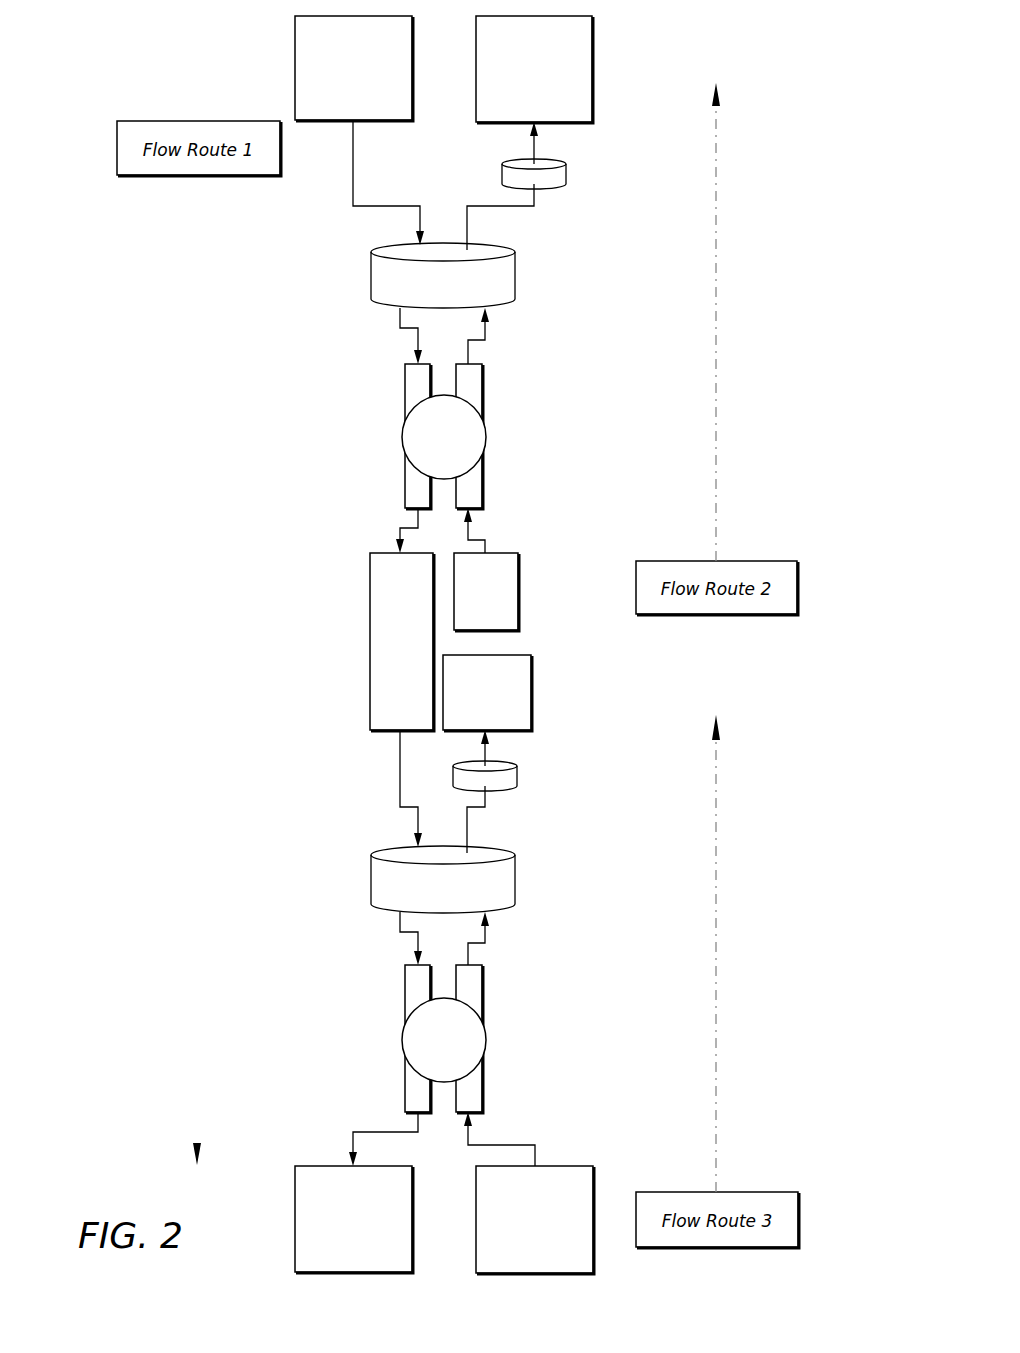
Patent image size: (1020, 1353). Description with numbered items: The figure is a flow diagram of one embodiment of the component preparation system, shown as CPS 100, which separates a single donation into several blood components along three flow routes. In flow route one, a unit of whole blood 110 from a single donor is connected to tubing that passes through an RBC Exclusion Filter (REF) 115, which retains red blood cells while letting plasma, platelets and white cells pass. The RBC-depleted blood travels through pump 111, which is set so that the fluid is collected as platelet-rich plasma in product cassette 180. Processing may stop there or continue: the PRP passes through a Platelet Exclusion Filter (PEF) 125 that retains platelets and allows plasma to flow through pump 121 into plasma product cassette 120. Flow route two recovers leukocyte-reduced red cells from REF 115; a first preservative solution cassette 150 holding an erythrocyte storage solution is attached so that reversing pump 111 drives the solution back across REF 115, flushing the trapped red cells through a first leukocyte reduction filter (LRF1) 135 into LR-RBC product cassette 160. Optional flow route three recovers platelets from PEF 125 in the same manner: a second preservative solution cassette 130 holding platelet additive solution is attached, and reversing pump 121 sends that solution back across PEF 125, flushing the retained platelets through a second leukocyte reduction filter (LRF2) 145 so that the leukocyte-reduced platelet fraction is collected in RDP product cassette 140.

The component preparation system (CPS) 100 is at (195, 81).
The unit of whole blood 110 is at (295, 68).
The LR-RBC product cassette 160 is at (592, 70).
The first leukocyte reduction filter (LRF1) 135 is at (566, 174).
The RBC Exclusion Filter (REF) 115 is at (505, 273).
The pump 111 is at (486, 437).
The product cassette 180 is at (370, 606).
The first preservative solution-containing cassette 150 is at (518, 584).
The RDP product cassette 140 is at (531, 692).
The second leukocyte reduction filter (LRF2) 145 is at (518, 775).
The Platelet Exclusion Filter (PEF) 125 is at (375, 876).
The pump 121 is at (486, 1028).
The second preservative solution-containing cassette 130 is at (570, 1166).
The plasma product cassette 120 is at (295, 1215).